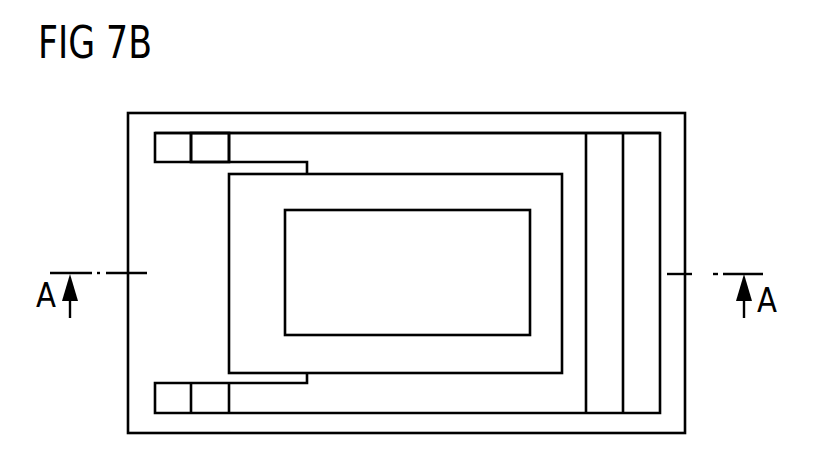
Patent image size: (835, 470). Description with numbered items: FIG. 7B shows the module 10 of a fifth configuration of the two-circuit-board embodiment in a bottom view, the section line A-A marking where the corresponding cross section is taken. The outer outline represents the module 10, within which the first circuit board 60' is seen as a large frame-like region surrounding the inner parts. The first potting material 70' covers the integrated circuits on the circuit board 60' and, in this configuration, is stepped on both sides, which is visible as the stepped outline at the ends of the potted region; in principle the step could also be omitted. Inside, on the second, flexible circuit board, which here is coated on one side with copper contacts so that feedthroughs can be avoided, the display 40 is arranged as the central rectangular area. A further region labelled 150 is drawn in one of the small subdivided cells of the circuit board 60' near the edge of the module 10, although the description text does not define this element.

The module 10 is at (717, 186).
The display 40 is at (298, 280).
The circuit board 60' is at (364, 273).
The first potting material 70' is at (407, 102).
The connection area 150 is at (207, 146).